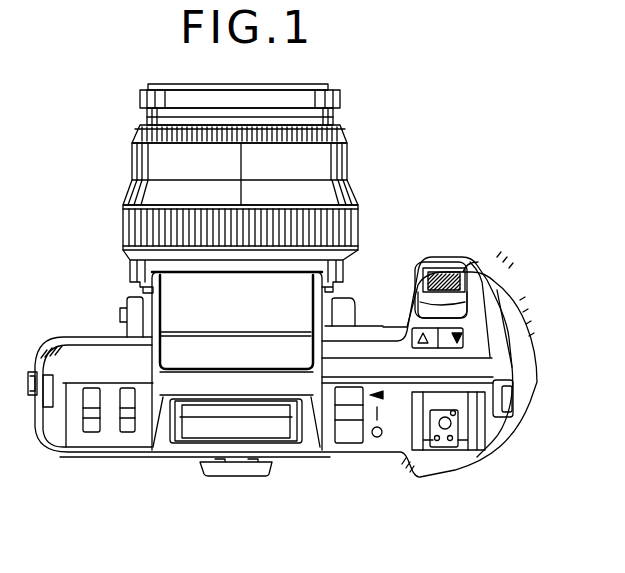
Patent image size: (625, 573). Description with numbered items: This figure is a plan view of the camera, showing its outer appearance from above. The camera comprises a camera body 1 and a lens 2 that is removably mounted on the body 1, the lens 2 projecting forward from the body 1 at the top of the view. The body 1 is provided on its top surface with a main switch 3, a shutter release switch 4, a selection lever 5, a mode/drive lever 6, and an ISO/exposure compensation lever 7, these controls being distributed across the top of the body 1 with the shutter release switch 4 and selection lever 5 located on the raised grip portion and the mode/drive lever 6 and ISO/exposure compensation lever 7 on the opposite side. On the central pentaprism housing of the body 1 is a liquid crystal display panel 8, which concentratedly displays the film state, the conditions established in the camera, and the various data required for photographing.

The camera body 1 is at (397, 468).
The lens 2 is at (347, 160).
The main switch 3 is at (352, 446).
The shutter release switch 4 is at (440, 268).
The selection lever 5 is at (463, 340).
The mode/drive lever 6 is at (121, 430).
The ISO/exposure compensation lever 7 is at (83, 430).
The liquid crystal display panel 8 is at (192, 430).